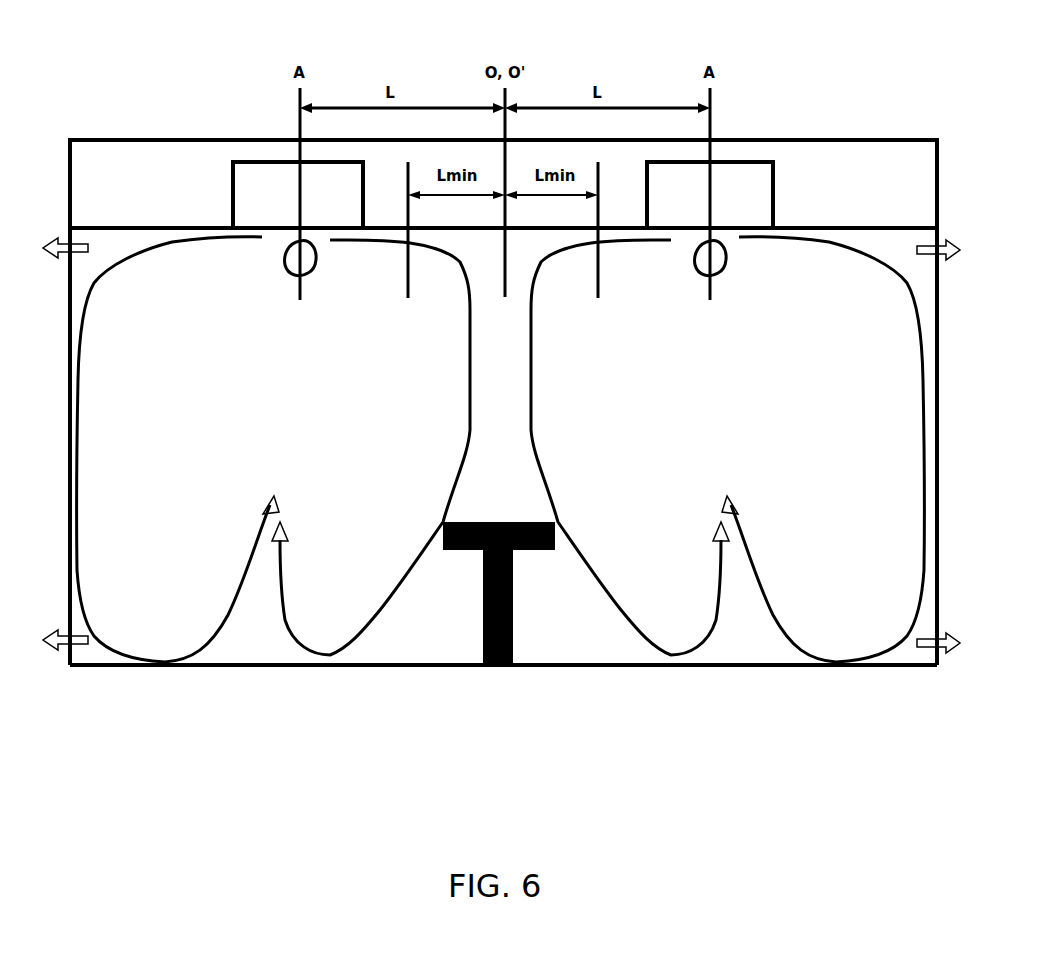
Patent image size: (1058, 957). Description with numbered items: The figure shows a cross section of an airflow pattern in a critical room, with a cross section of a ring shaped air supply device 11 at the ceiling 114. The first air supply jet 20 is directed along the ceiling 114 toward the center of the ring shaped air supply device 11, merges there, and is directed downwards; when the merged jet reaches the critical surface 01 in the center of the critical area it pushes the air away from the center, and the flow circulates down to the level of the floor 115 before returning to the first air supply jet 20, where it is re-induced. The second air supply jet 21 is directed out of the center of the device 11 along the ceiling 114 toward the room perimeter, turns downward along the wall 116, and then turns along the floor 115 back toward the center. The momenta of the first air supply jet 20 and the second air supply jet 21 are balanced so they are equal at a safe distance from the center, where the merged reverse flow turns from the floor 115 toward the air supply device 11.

The ring shaped air supply device 11 is at (223, 160).
The ceiling 114 is at (840, 227).
The floor 115 is at (580, 665).
The wall 116 is at (70, 313).
The first air supply jet 20 is at (468, 380).
The second air supply jet 21 is at (85, 587).
The critical surface 01 is at (503, 523).